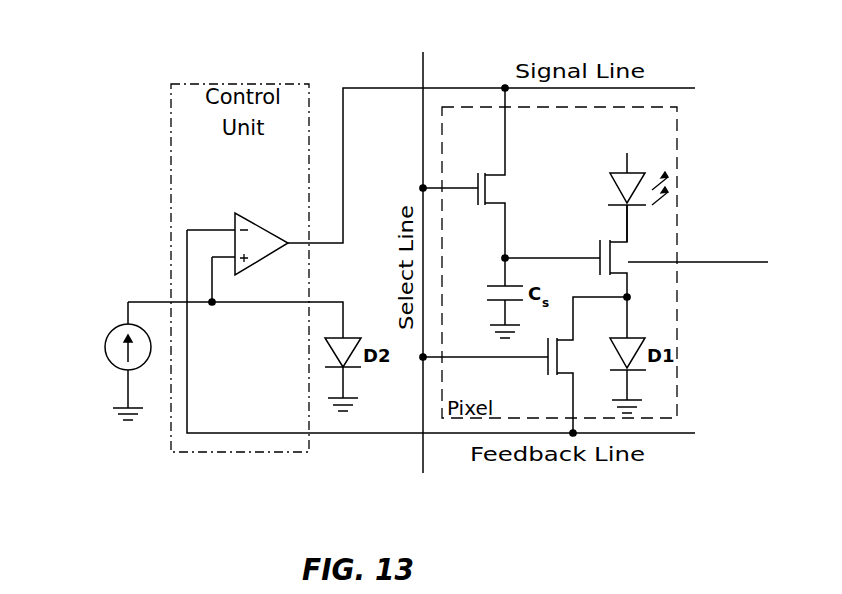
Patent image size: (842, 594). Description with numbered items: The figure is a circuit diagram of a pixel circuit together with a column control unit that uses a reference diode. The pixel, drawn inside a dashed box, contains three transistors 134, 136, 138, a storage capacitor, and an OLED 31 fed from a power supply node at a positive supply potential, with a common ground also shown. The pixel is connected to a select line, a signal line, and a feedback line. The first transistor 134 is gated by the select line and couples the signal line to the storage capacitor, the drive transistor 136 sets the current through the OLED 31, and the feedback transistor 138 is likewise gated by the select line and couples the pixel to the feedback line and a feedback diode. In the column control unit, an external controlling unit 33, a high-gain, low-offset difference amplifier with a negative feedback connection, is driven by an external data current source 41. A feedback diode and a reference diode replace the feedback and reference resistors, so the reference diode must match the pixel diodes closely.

The OLED 31 is at (620, 178).
The external controlling unit 33 is at (258, 222).
The external data current source 41 is at (110, 357).
The select transistor 134 is at (518, 192).
The drive transistor 136 is at (718, 263).
The feedback transistor 138 is at (585, 360).